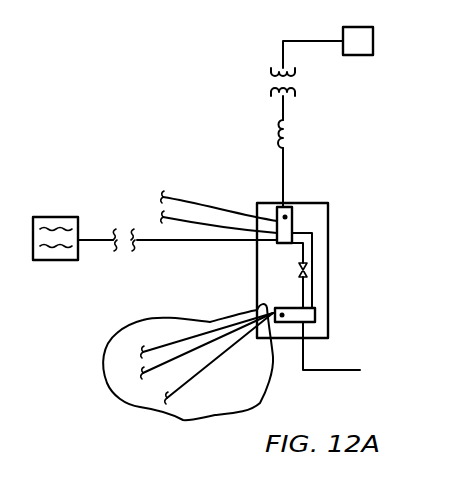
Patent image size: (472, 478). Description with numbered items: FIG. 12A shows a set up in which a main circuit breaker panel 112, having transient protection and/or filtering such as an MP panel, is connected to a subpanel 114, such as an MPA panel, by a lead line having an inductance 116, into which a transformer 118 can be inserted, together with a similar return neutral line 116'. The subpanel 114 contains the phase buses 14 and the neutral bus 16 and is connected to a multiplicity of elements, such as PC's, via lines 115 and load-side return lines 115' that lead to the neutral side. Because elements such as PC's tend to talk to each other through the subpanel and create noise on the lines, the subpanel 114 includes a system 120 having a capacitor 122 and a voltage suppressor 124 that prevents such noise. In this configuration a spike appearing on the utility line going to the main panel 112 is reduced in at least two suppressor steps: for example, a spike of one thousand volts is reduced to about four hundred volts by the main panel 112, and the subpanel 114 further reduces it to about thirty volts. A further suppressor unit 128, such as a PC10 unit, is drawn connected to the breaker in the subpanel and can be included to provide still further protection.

The main circuit breaker panel 112 is at (367, 41).
The transformer 118 is at (270, 85).
The lead line inductance 116 is at (314, 134).
The subpanel 114 is at (338, 223).
The phase buses 14 is at (293, 216).
The lines 115 is at (219, 199).
The further suppressor unit 128 is at (58, 222).
The voltage suppressor 124 is at (309, 266).
The capacitor 122 is at (297, 271).
The system 120 is at (327, 293).
The neutral bus 16 is at (316, 313).
The return neutral line 116' is at (360, 362).
The load conductors 115' is at (188, 362).